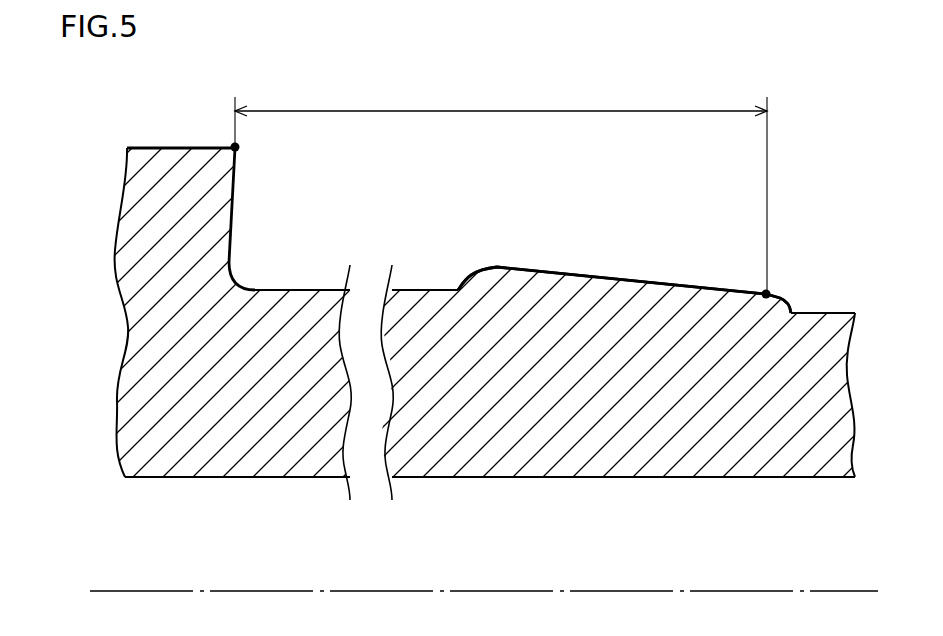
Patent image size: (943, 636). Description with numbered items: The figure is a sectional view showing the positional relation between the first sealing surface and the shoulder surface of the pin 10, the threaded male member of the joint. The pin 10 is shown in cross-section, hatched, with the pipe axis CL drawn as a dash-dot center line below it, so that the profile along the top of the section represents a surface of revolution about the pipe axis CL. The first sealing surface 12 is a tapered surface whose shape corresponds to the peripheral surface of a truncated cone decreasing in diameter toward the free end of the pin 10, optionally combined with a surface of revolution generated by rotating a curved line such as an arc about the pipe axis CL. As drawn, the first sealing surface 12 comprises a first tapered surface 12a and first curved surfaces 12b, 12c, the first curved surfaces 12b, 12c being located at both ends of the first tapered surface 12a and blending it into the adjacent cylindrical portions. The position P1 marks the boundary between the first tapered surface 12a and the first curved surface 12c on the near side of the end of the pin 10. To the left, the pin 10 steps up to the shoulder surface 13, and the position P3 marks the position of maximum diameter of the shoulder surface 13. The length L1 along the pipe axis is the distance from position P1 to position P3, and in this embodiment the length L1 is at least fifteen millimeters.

The pin 10 is at (166, 492).
The first sealing surface 12 is at (767, 532).
The first tapered surface 12a is at (626, 280).
The first curved surface 12b is at (477, 275).
The first curved surface 12c is at (787, 303).
The shoulder surface 13 is at (230, 213).
The position P1 is at (766, 294).
The position P3 is at (235, 147).
The length L1 is at (501, 189).
The pipe axis CL is at (499, 590).